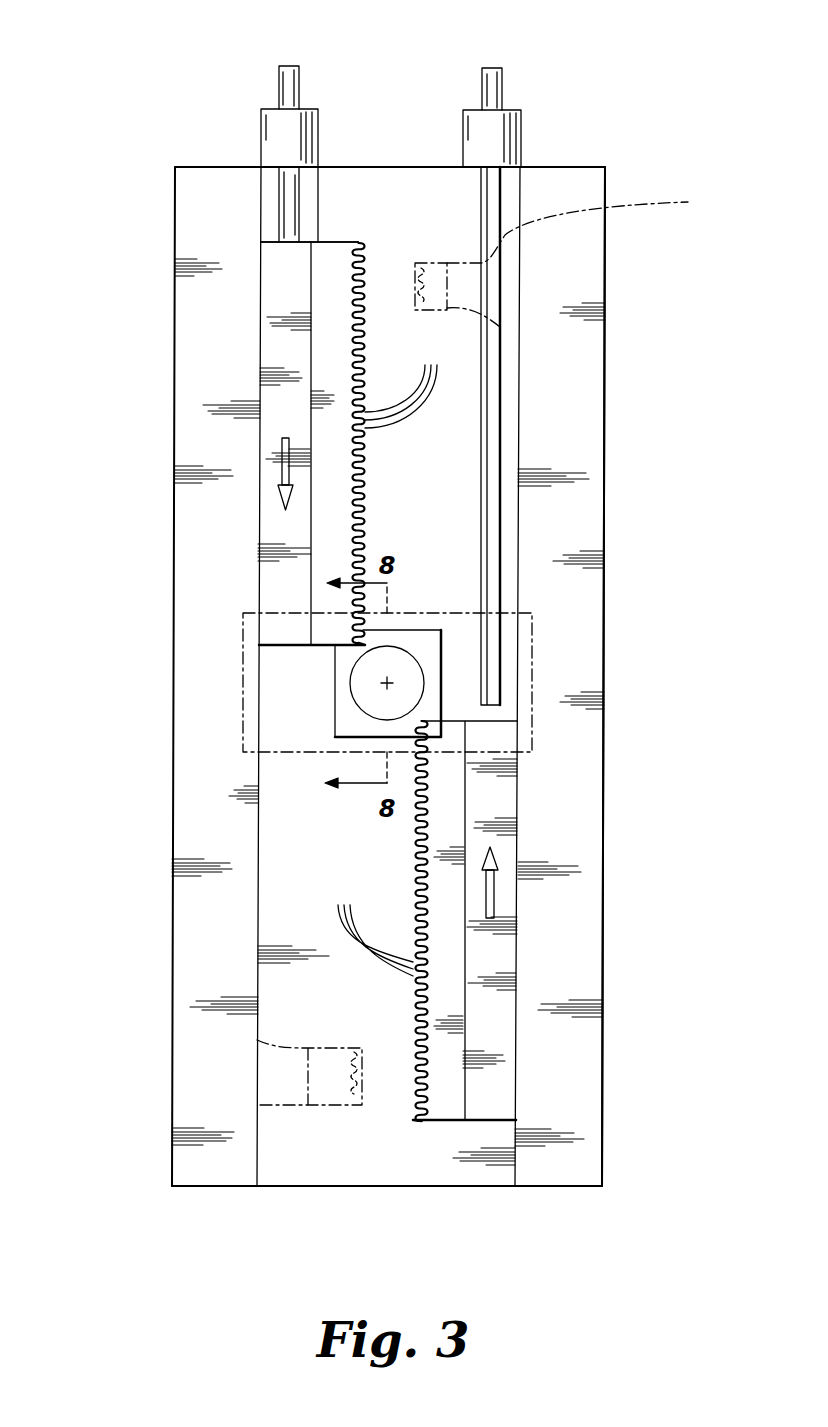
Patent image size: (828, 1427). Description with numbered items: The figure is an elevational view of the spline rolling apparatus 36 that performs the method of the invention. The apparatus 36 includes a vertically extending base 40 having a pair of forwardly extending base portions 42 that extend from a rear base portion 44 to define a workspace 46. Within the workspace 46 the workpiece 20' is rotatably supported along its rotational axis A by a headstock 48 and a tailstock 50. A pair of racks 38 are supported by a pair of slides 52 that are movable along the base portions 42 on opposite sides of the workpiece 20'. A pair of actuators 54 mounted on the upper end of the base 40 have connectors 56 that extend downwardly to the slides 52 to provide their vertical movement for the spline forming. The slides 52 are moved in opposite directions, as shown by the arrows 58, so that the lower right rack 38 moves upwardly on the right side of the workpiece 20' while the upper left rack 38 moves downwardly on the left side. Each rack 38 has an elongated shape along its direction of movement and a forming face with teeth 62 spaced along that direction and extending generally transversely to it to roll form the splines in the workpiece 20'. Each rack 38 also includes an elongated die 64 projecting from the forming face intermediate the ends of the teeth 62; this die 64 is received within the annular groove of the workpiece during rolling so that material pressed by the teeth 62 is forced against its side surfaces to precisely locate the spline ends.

The workpiece 20' is at (536, 671).
The apparatus 36 is at (632, 321).
The racks 38 is at (316, 358).
The base 40 is at (621, 730).
The base portions 42 is at (197, 430).
The rear base portion 44 is at (413, 1177).
The workspace 46 is at (397, 168).
The headstock 48 is at (441, 637).
The tailstock 50 is at (293, 613).
The slides 52 is at (263, 400).
The actuators 54 is at (261, 123).
The connectors 56 is at (280, 198).
The arrows 58 is at (280, 468).
The teeth 62 is at (389, 658).
The elongated die 64 is at (365, 521).
The rotational axis A is at (387, 683).